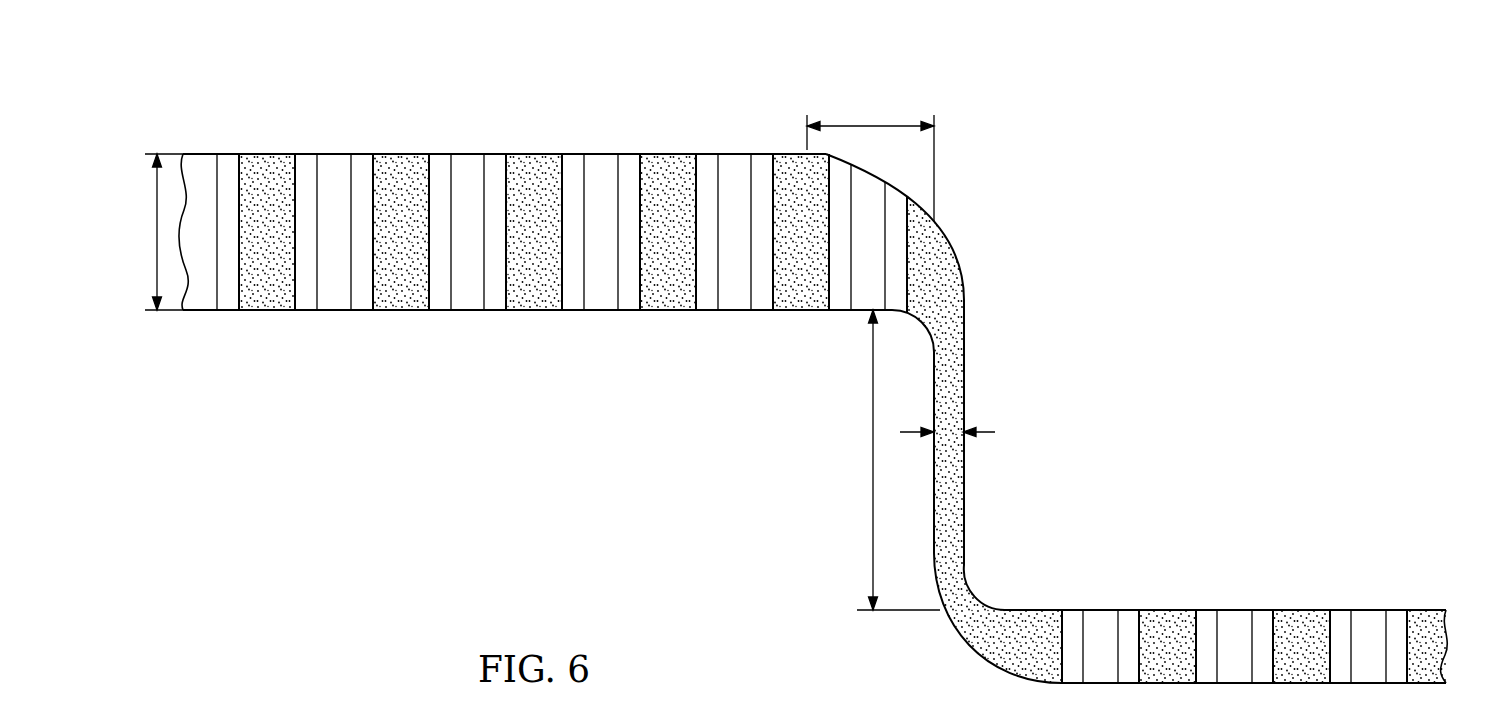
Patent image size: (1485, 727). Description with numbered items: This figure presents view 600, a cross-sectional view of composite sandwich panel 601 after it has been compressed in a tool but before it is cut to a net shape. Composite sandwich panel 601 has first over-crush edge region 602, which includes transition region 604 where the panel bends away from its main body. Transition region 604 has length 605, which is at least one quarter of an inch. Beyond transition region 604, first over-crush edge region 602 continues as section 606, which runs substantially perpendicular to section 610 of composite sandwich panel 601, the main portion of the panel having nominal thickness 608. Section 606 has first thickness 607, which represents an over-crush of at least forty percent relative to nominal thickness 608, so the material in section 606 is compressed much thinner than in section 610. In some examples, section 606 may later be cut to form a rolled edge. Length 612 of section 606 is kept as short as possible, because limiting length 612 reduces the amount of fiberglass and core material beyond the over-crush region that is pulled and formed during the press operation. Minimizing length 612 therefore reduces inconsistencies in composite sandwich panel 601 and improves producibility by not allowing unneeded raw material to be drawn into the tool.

The view 600 is at (765, 344).
The composite sandwich panel 601 is at (543, 188).
The first over-crush edge region 602 is at (982, 242).
The transition region 604 is at (1136, 414).
The length 605 is at (870, 125).
The section 606 is at (982, 397).
The first thickness 607 is at (985, 433).
The nominal thickness 608 is at (157, 232).
The section 610 is at (390, 154).
The length 612 is at (873, 460).